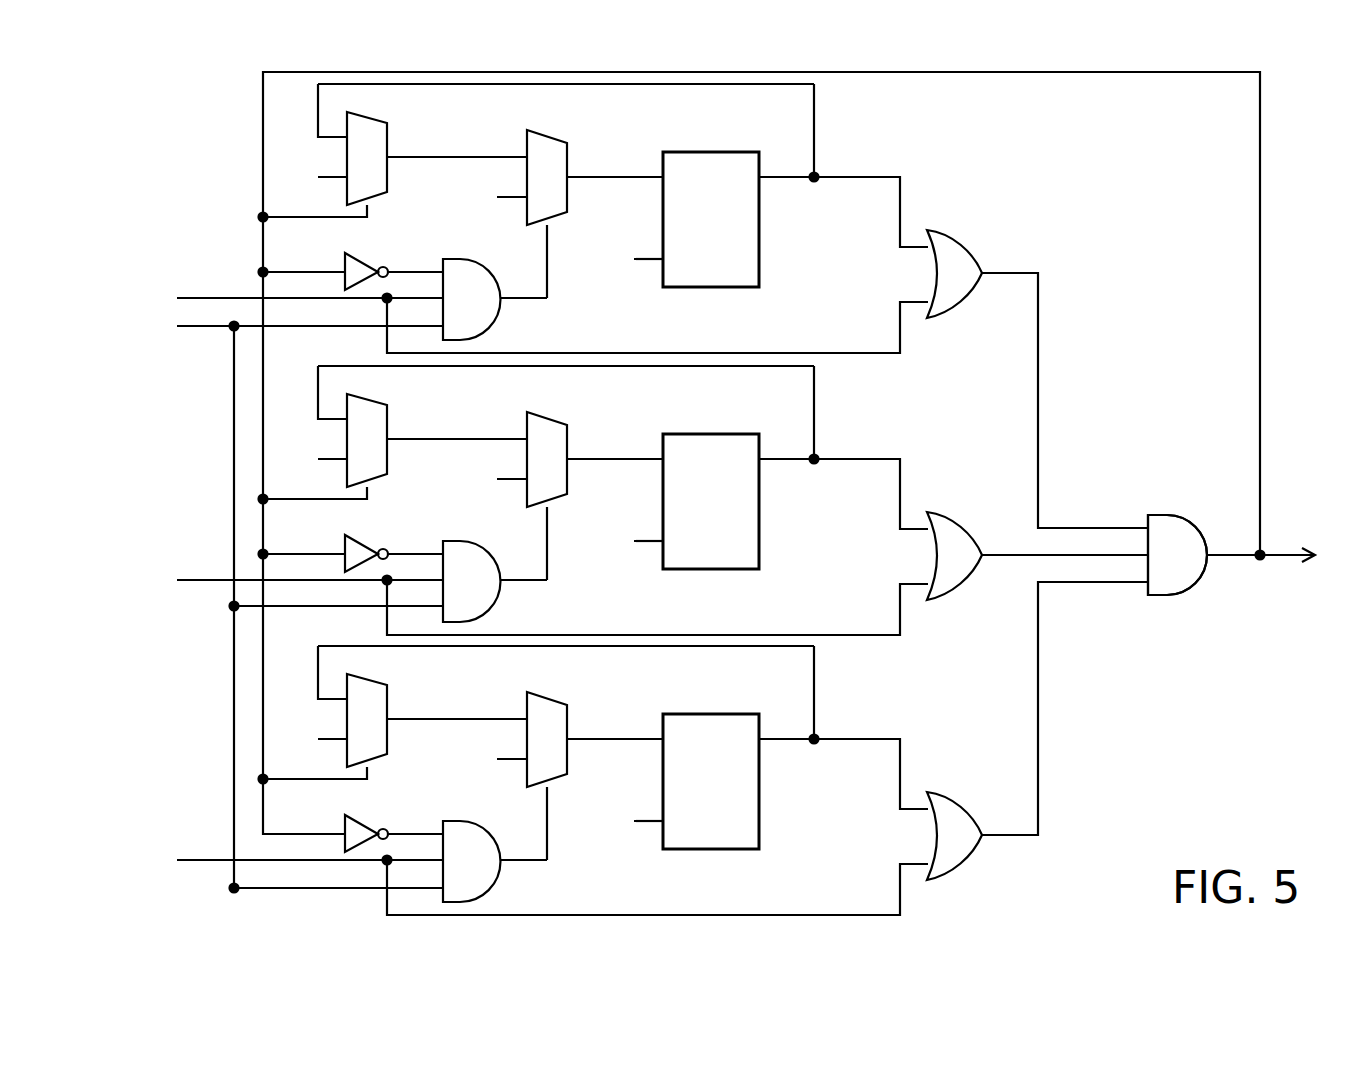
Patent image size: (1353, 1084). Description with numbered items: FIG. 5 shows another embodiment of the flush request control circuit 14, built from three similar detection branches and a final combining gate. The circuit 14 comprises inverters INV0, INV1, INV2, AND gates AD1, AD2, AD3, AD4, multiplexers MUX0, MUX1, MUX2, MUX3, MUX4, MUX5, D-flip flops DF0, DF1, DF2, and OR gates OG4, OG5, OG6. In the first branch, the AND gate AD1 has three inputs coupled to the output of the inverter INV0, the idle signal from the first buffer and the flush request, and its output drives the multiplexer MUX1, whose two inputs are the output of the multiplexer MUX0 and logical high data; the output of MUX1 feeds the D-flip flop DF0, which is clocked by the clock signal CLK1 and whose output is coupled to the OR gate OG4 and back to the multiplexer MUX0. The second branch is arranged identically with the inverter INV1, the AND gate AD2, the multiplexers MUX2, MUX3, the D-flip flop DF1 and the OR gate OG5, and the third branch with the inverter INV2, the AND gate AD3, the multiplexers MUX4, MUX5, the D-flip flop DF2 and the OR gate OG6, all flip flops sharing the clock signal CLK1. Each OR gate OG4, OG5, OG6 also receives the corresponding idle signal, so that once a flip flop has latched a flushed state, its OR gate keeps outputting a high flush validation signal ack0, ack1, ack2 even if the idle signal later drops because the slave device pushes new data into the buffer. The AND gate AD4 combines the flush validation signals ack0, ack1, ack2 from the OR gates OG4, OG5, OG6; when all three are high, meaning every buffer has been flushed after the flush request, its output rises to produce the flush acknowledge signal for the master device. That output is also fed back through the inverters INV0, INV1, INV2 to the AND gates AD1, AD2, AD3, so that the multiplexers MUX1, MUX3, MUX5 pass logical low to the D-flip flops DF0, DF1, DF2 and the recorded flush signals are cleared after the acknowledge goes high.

The multiplexer MUX0 is at (367, 115).
The multiplexer MUX1 is at (547, 134).
The multiplexer MUX2 is at (538, 432).
The multiplexer MUX3 is at (564, 487).
The multiplexer MUX4 is at (538, 712).
The multiplexer MUX5 is at (564, 767).
The inverter INV0 is at (356, 255).
The inverter INV1 is at (353, 540).
The inverter INV2 is at (353, 820).
The AND gate AD1 is at (498, 329).
The AND gate AD2 is at (517, 582).
The AND gate AD3 is at (517, 862).
The AND gate AD4 is at (1160, 516).
The D-flip flop DF0 is at (676, 152).
The D-flip flop DF1 is at (697, 486).
The D-flip flop DF2 is at (697, 766).
The OR gate OG4 is at (930, 272).
The OR gate OG5 is at (995, 556).
The OR gate OG6 is at (995, 731).
The flush request control circuit 14 is at (1161, 752).
The flush validation signal ack0 is at (1120, 527).
The flush validation signal ack1 is at (1073, 554).
The flush validation signal ack2 is at (1093, 584).
The clock signal CLK1 is at (605, 541).